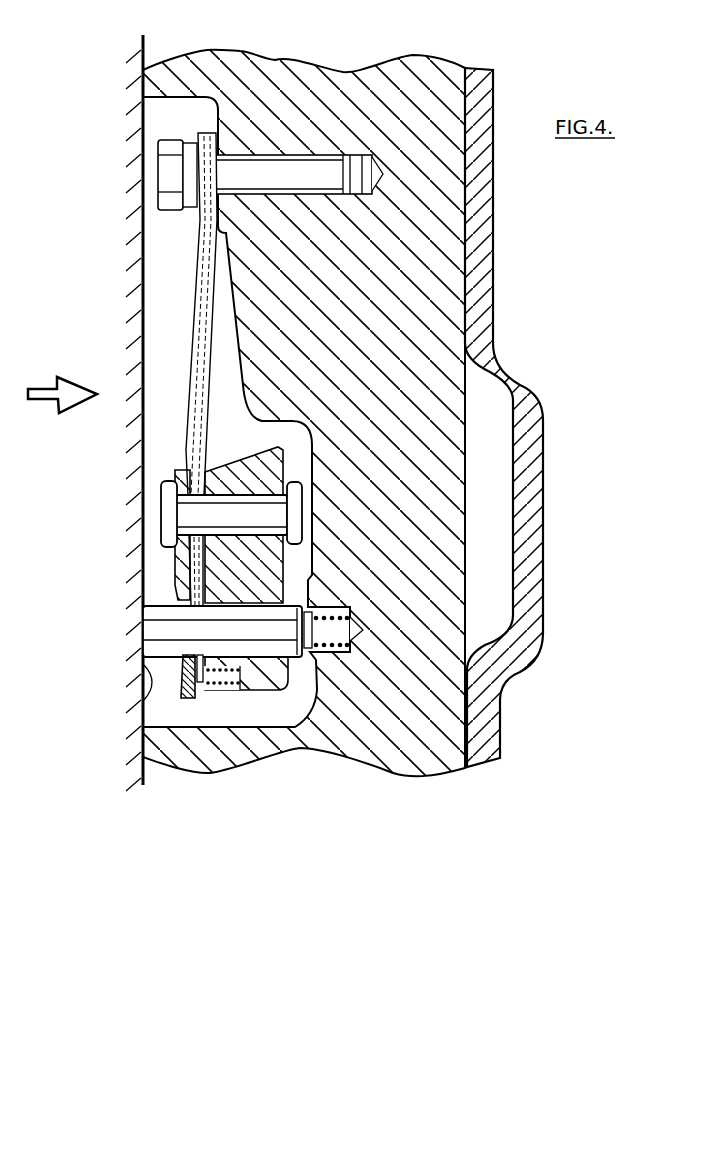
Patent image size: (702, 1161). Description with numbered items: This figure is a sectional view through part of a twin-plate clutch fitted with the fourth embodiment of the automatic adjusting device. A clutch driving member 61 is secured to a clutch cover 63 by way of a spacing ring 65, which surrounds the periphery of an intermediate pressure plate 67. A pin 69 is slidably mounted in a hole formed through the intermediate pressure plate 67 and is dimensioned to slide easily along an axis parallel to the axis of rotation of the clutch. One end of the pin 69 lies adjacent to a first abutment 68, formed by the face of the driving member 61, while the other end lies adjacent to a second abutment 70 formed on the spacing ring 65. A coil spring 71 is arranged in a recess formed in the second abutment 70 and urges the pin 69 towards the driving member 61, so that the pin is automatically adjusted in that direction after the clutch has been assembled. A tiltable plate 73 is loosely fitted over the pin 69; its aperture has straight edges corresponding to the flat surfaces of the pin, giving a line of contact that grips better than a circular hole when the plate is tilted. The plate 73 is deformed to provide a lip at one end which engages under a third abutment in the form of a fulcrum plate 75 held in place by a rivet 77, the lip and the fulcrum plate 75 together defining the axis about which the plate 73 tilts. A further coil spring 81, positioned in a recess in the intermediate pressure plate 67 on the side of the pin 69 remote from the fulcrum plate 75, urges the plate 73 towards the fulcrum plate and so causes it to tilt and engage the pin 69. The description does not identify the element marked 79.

The clutch driving member 61 is at (112, 520).
The clutch cover 63 is at (528, 452).
The spacing ring 65 is at (323, 60).
The intermediate pressure plate 67 is at (268, 692).
The first abutment 68 is at (143, 698).
The pin 69 is at (158, 632).
The second abutment 70 is at (308, 672).
The coil spring 71 is at (337, 650).
The tiltable plate 73 is at (145, 729).
The fulcrum plate 75 is at (178, 565).
The rivet 77 is at (163, 507).
The block 79 is at (178, 593).
The coil spring 81 is at (199, 684).